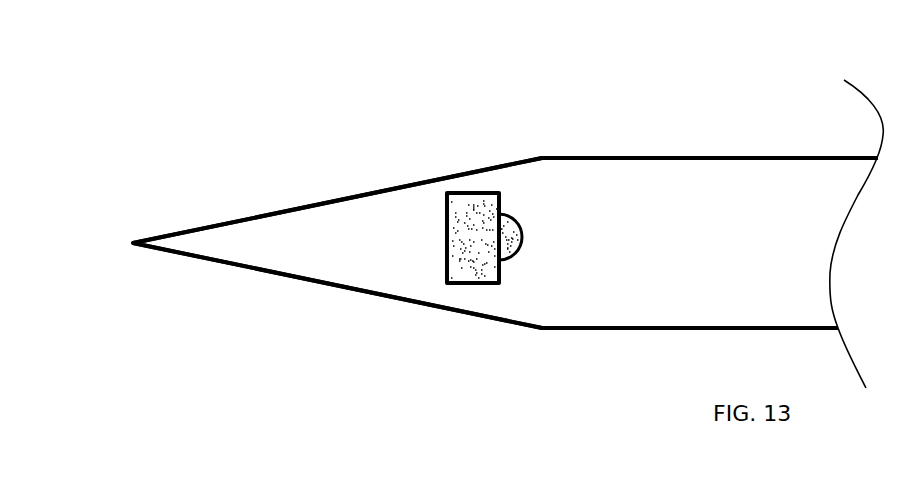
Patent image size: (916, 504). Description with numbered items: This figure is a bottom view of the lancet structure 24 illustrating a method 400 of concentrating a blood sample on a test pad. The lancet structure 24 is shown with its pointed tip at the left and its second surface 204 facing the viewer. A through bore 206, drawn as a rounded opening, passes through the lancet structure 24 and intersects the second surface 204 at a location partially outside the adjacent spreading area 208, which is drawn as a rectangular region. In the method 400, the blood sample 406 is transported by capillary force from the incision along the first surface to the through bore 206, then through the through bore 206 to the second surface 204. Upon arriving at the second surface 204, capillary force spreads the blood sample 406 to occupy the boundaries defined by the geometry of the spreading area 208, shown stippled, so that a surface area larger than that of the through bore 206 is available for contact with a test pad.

The method of concentrating a blood sample on a test pad 400 is at (128, 101).
The lancet structure 24 is at (603, 156).
The second surface 204 is at (662, 300).
The through bore 206 is at (514, 214).
The spreading area 208 is at (447, 238).
The blood sample 406 is at (472, 203).